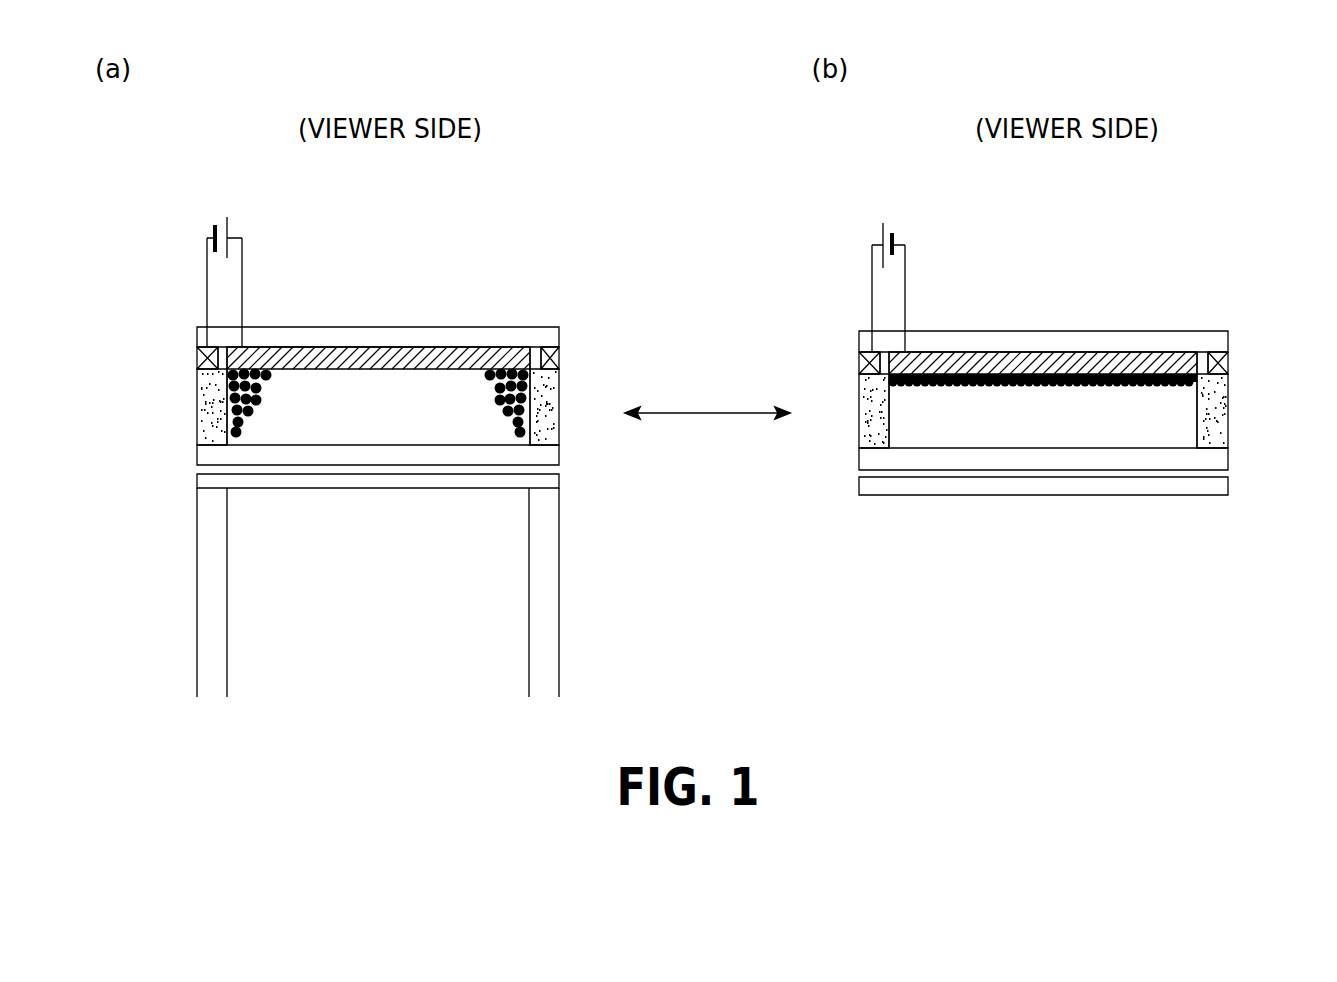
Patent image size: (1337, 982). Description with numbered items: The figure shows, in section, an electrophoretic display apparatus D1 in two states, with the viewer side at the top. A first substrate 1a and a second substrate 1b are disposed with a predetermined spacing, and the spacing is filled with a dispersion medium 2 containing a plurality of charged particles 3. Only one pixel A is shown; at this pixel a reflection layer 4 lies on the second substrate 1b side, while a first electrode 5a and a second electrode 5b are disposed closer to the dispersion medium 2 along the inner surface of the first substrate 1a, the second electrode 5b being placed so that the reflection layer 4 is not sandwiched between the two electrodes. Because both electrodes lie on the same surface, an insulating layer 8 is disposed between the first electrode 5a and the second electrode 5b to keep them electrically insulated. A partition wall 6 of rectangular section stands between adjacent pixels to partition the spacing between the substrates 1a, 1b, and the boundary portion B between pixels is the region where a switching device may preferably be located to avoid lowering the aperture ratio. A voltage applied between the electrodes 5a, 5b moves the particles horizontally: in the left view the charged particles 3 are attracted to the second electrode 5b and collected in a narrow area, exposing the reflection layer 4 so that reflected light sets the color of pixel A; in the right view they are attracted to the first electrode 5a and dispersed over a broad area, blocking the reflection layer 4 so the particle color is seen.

The first substrate 1a is at (355, 335).
The second substrate 1b is at (430, 478).
The dispersion medium 2 is at (380, 423).
The charged particles 3 is at (253, 433).
The reflection layer 4 is at (495, 453).
The first electrode 5a is at (272, 347).
The second electrode 5b is at (200, 360).
The partition wall 6 is at (210, 410).
The insulating layer 8 is at (212, 380).
The electrophoretic display apparatus D1 is at (562, 137).
The pixel A is at (529, 685).
The boundary portion B is at (637, 685).